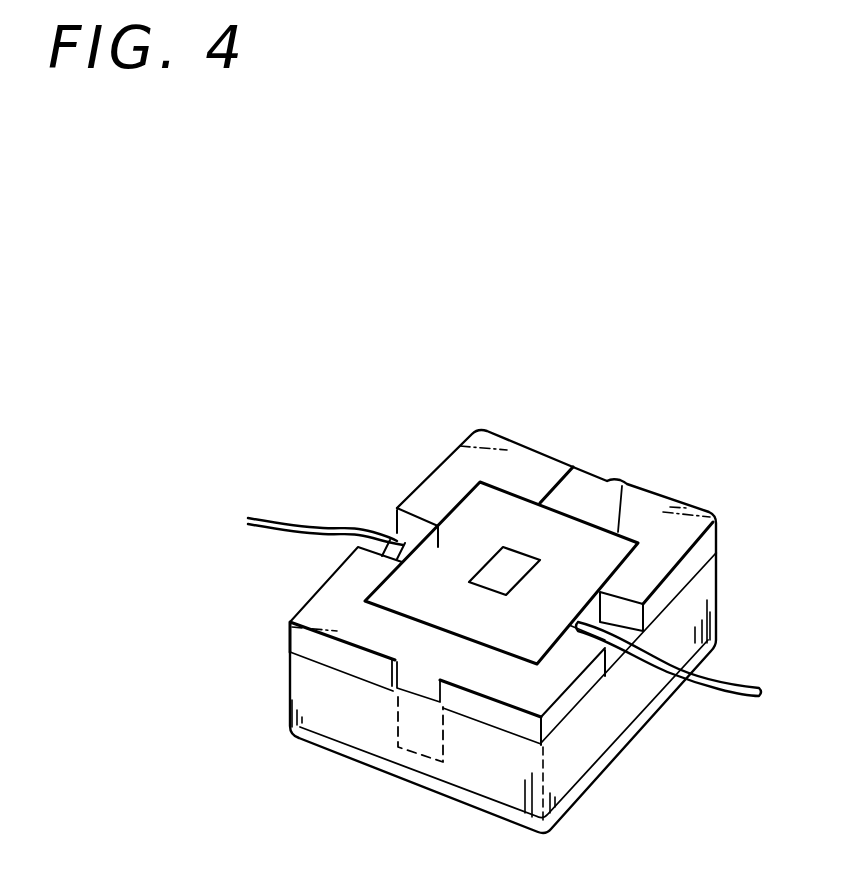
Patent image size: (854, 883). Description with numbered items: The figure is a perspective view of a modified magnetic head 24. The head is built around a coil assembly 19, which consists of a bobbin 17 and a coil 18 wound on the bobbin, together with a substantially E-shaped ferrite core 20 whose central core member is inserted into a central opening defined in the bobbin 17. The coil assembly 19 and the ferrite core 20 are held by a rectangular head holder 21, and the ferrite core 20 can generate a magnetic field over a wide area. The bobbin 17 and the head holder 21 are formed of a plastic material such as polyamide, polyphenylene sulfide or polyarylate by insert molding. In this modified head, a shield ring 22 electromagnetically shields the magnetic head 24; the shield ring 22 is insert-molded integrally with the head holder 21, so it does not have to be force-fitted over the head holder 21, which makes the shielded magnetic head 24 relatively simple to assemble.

The bobbin 17 is at (507, 512).
The coil 18 is at (727, 692).
The coil assembly 19 is at (628, 502).
The ferrite core 20 is at (513, 575).
The head holder 21 is at (323, 610).
The shield ring 22 is at (325, 720).
The magnetic head 24 is at (446, 434).